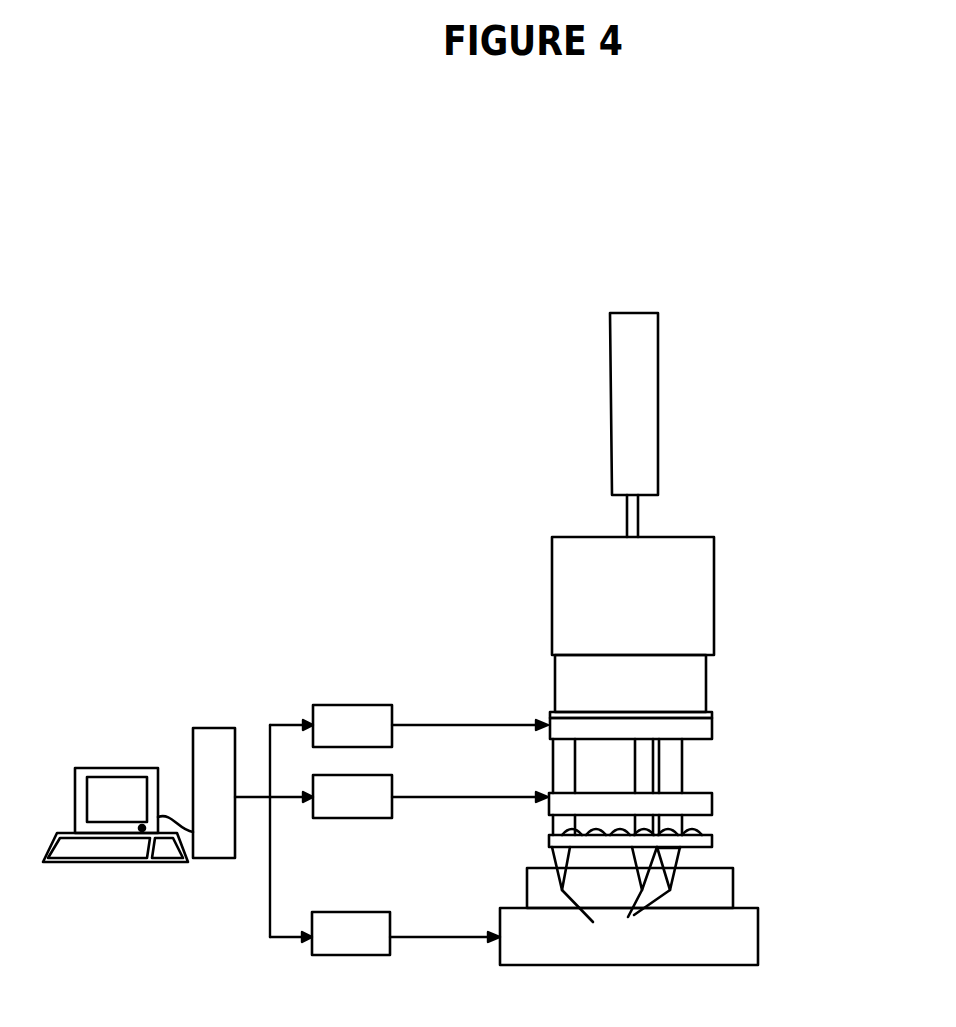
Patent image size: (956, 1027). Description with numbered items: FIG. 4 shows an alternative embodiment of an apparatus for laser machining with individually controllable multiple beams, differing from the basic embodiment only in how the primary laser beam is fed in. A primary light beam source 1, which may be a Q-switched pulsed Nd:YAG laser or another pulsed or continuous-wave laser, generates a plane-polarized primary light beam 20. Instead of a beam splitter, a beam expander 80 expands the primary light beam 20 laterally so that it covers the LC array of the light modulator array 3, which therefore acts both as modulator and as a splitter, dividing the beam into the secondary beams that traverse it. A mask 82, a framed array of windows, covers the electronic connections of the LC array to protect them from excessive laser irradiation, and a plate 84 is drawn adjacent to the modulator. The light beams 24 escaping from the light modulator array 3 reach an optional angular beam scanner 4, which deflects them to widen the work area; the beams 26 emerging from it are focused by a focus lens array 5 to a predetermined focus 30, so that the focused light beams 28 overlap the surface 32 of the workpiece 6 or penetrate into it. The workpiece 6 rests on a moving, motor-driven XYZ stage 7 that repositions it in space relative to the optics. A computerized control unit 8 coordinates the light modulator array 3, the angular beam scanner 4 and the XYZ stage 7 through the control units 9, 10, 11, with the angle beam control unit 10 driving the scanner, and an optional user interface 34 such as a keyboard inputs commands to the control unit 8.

The primary light beam source 1 is at (637, 378).
The primary light beam 20 is at (632, 515).
The beam expander 80 is at (690, 603).
The mask 82 is at (688, 676).
The mounting plate 84 is at (700, 715).
The light modulator array 3 is at (710, 732).
The light beams 24 is at (675, 760).
The angular beam scanner 4 is at (697, 805).
The focus lens array 5 is at (700, 835).
The beams 26 is at (602, 828).
The focused light beams 28 is at (640, 855).
The focus 30 is at (637, 915).
The surface 32 is at (683, 865).
The workpiece 6 is at (708, 901).
The XYZ stage 7 is at (728, 943).
The control unit 8 is at (220, 745).
The control unit 9 is at (338, 717).
The angle beam control unit 10 is at (360, 800).
The control unit 11 is at (358, 938).
The user interface 34 is at (98, 852).